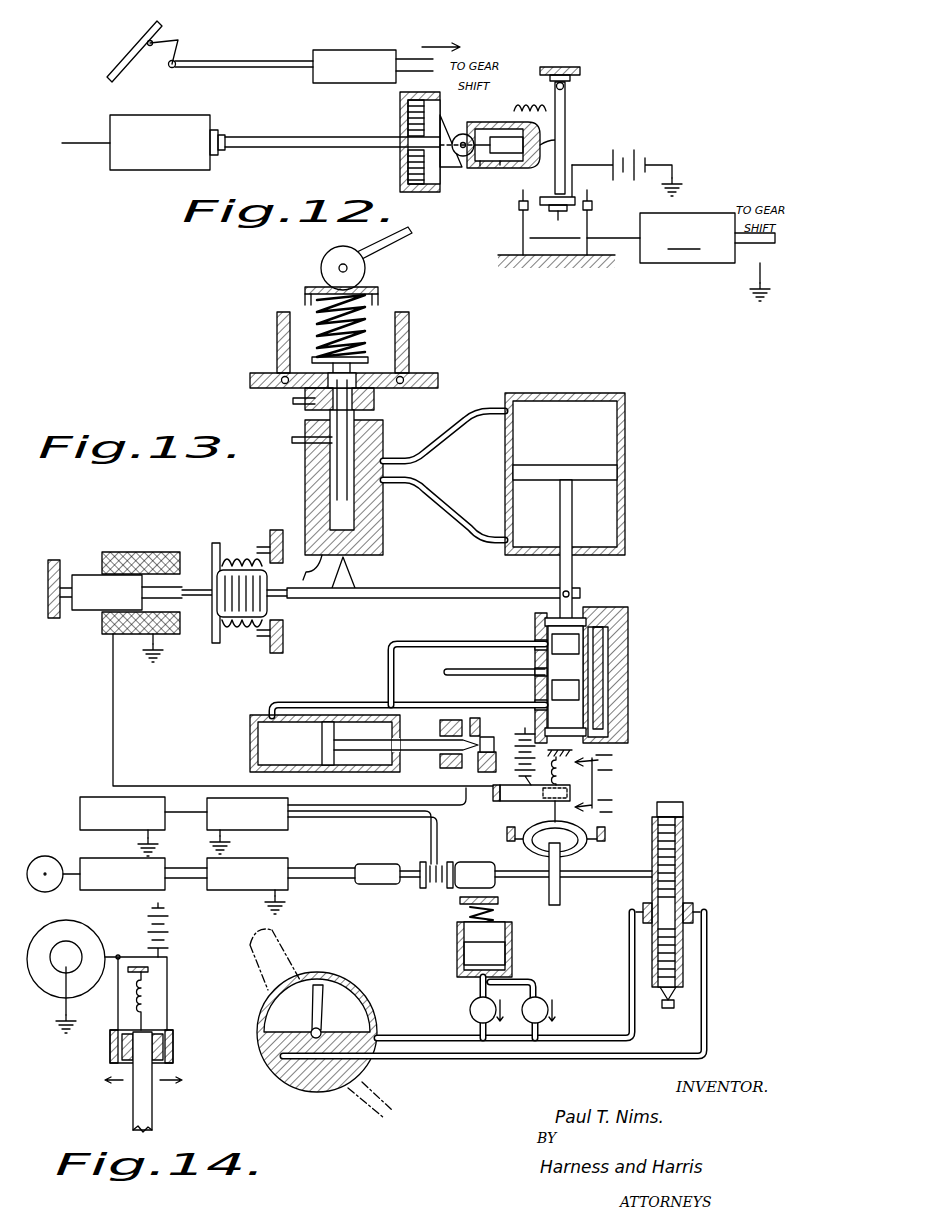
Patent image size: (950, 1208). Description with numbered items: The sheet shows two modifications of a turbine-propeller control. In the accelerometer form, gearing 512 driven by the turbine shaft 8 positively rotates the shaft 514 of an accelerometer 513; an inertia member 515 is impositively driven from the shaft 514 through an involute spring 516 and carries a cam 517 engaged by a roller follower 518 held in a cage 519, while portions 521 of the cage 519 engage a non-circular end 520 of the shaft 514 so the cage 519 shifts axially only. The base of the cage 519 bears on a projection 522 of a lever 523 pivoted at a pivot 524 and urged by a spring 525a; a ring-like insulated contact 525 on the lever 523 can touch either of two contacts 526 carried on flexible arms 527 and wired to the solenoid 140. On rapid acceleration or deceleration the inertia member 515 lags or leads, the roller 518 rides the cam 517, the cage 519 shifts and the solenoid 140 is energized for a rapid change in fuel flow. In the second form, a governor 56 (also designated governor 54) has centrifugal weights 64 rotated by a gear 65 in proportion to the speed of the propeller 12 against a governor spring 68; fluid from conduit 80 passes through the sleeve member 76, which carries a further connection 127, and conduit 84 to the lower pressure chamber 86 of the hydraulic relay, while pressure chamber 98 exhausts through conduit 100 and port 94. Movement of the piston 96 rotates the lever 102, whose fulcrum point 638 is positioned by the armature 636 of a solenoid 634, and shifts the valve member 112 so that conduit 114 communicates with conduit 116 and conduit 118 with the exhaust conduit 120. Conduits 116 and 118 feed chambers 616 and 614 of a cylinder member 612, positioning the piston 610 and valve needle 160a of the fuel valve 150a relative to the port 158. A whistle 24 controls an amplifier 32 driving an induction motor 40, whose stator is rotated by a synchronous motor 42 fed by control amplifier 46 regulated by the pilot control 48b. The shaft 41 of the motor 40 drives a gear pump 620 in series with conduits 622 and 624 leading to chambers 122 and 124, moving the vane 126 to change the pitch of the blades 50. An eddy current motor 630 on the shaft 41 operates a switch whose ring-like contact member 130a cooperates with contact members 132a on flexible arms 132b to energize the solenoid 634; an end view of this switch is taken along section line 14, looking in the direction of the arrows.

In FIG. 12, the pedal operated switch 48b is at (356, 60).
In FIG. 13, the pedal operated switch 48b is at (130, 847).
In FIG. 12, the turbine shaft 8 is at (82, 140).
In FIG. 12, the gearing 512 is at (178, 126).
In FIG. 12, the shaft 514 is at (282, 124).
In FIG. 12, the accelerometer 513 is at (391, 106).
In FIG. 12, the involute spring 516 is at (408, 118).
In FIG. 12, the inertia member 515 is at (436, 98).
In FIG. 12, the cam 517 is at (460, 125).
In FIG. 12, the roller follower 518 is at (470, 131).
In FIG. 12, the cage 519 is at (487, 165).
In FIG. 12, the portions of the cage 521 is at (501, 166).
In FIG. 12, the non-circular end 520 is at (556, 130).
In FIG. 12, the projection 522 is at (556, 142).
In FIG. 12, the lever 523 is at (566, 105).
In FIG. 12, the pivot 524 is at (567, 86).
In FIG. 12, the spring 525a is at (528, 80).
In FIG. 12, the ring-like insulated contact 525 is at (562, 213).
In FIG. 12, the contacts 526 is at (519, 206).
In FIG. 12, the flexible arms 527 is at (522, 223).
In FIG. 12, the solenoid 140 is at (707, 257).
In FIG. 13, the governor spring 68 is at (380, 302).
In FIG. 13, the centrifugal weights 64 is at (277, 320).
In FIG. 13, the governor 56 is at (419, 322).
In FIG. 13, the gear 65 is at (440, 380).
In FIG. 13, the conduit 80 is at (290, 400).
In FIG. 13, the sleeve member 76 is at (384, 427).
In FIG. 13, the passage 127 is at (294, 446).
In FIG. 13, the conduit 100 is at (440, 436).
In FIG. 13, the conduit 84 is at (442, 498).
In FIG. 13, the governor 54 is at (638, 426).
In FIG. 13, the pressure chamber 98 is at (590, 440).
In FIG. 13, the piston 96 is at (600, 478).
In FIG. 13, the lower pressure chamber 86 is at (552, 515).
In FIG. 13, the port 94 is at (313, 572).
In FIG. 13, the lever member 102 is at (414, 590).
In FIG. 13, the exhaust conduit 120 is at (600, 630).
In FIG. 13, the valve member 112 is at (583, 673).
In FIG. 13, the conduit 118 is at (470, 642).
In FIG. 13, the conduit 114 is at (495, 659).
In FIG. 13, the conduit 116 is at (493, 694).
In FIG. 13, the armature 636 is at (88, 603).
In FIG. 14, the armature 636 is at (63, 970).
In FIG. 13, the solenoid 634 is at (102, 634).
In FIG. 14, the solenoid 634 is at (66, 920).
In FIG. 13, the fulcrum point 638 is at (268, 602).
In FIG. 13, the cylinder member 612 is at (243, 757).
In FIG. 13, the chamber 616 is at (274, 740).
In FIG. 13, the chamber 614 is at (348, 743).
In FIG. 13, the piston 610 is at (322, 752).
In FIG. 13, the valve 150a is at (483, 743).
In FIG. 13, the port 158 is at (490, 758).
In FIG. 13, the valve needle 160a is at (465, 760).
In FIG. 13, the flexible arms 132b is at (570, 792).
In FIG. 14, the flexible arms 132b is at (110, 1040).
In FIG. 13, the section line 14 is at (606, 772).
In FIG. 13, the whistle 24 is at (75, 798).
In FIG. 13, the amplifier 32 is at (256, 823).
In FIG. 13, the control amplifier 46 is at (240, 862).
In FIG. 13, the synchronous motor 42 is at (368, 864).
In FIG. 13, the induction motor 40 is at (492, 848).
In FIG. 13, the eddy current motor 630 is at (597, 829).
In FIG. 13, the shaft 41 is at (525, 879).
In FIG. 13, the propeller 12 is at (249, 1026).
In FIG. 13, the vane 126 is at (326, 984).
In FIG. 13, the pressure chamber 124 is at (300, 1031).
In FIG. 13, the pressure chamber 122 is at (355, 1031).
In FIG. 13, the conduit 622 is at (393, 1036).
In FIG. 13, the conduit 624 is at (402, 1060).
In FIG. 13, the propeller blades 50 is at (352, 1108).
In FIG. 13, the gear pump 620 is at (696, 850).
In FIG. 14, the ring-like contact member 130a is at (118, 1052).
In FIG. 14, the contact members 132a is at (122, 1065).